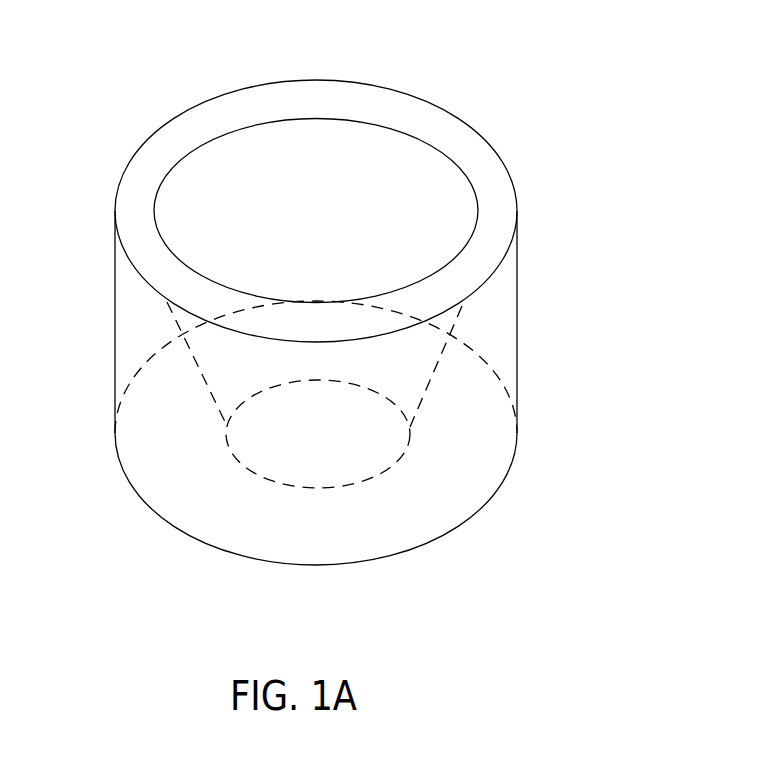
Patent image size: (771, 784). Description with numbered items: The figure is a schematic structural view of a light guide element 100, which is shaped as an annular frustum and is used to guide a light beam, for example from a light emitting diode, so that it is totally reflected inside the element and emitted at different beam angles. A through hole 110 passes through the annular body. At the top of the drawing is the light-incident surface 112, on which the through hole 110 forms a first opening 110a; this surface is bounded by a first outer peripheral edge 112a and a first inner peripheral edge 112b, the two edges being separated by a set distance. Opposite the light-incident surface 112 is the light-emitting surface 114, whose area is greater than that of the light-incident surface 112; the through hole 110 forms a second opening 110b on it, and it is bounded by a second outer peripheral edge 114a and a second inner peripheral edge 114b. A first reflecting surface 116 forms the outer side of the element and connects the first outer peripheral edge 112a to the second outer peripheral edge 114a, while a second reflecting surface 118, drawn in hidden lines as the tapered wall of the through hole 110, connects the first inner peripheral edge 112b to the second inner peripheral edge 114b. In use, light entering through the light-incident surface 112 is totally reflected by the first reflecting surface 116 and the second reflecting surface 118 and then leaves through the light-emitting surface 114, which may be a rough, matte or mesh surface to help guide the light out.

The light guide element 100 is at (57, 86).
The through hole 110 is at (417, 220).
The first opening 110a is at (340, 197).
The second opening 110b is at (350, 455).
The light-incident surface 112 is at (228, 108).
The first outer peripheral edge 112a is at (463, 118).
The first inner peripheral edge 112b is at (283, 118).
The light-emitting surface 114 is at (158, 487).
The second outer peripheral edge 114a is at (487, 507).
The second inner peripheral edge 114b is at (297, 485).
The first reflecting surface 116 is at (517, 390).
The second reflecting surface 118 is at (460, 360).